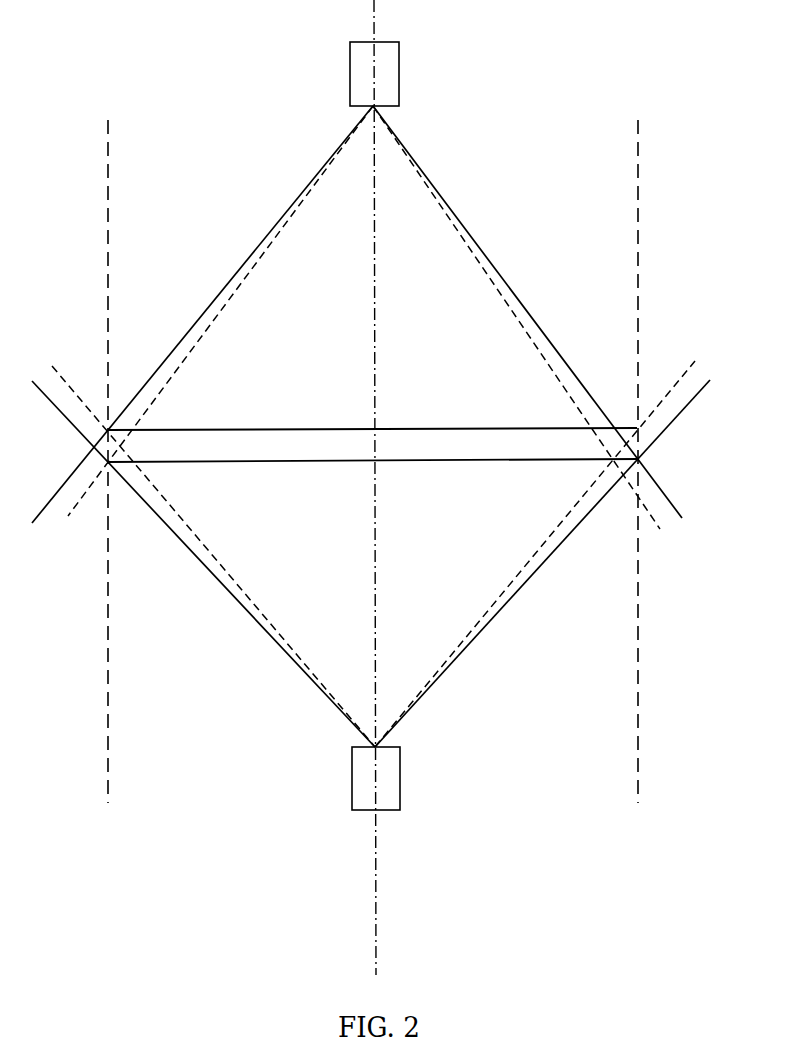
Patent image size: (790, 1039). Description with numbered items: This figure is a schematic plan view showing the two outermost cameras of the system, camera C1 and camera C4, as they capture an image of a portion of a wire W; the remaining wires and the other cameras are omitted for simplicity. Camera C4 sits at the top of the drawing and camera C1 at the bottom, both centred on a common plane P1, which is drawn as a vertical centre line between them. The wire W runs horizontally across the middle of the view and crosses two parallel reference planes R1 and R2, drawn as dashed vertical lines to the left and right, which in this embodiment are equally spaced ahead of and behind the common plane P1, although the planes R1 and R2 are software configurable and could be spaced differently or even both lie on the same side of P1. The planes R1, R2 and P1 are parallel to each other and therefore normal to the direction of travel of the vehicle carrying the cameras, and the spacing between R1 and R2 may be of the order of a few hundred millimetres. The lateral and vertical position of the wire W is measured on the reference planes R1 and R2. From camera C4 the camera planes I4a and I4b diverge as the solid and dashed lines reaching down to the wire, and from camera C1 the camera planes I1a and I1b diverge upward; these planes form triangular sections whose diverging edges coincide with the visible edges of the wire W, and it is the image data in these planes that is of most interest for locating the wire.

The camera C4 is at (399, 57).
The camera C1 is at (352, 797).
The common plane P1 is at (376, 918).
The reference plane R1 is at (109, 476).
The reference plane R2 is at (640, 478).
The camera plane I4a is at (493, 262).
The camera plane I4b is at (536, 350).
The camera plane I1a is at (545, 562).
The camera plane I1b is at (498, 600).
The wire W is at (558, 440).